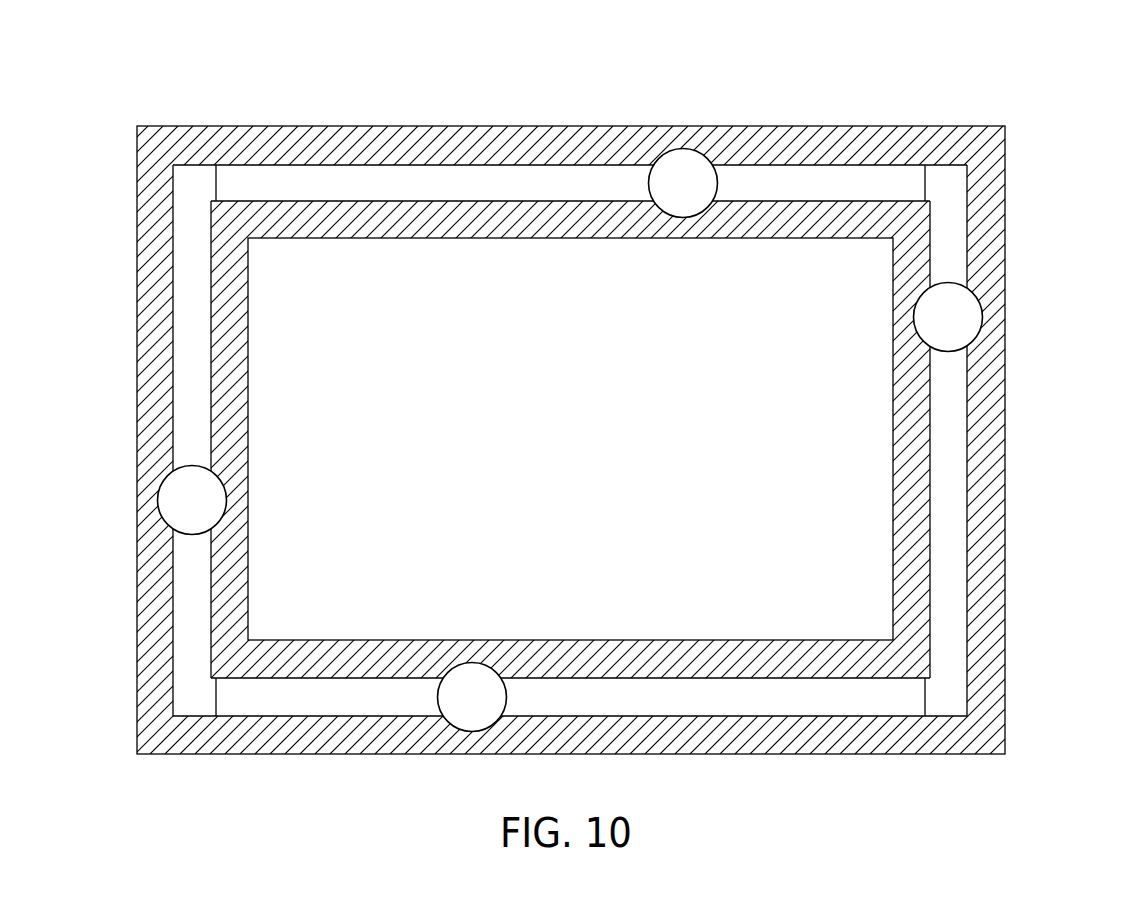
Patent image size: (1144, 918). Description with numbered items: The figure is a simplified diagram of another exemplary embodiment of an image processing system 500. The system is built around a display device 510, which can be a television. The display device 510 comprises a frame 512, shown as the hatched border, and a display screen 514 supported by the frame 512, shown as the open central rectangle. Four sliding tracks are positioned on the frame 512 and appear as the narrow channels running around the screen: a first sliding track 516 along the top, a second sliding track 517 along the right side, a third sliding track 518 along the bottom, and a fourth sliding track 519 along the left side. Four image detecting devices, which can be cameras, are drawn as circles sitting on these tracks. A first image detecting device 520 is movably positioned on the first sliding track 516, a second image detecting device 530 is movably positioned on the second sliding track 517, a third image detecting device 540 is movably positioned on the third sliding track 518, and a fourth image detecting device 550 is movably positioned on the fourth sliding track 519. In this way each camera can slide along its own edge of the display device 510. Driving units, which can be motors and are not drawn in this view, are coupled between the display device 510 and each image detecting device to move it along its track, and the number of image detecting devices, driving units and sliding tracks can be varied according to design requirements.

The image processing system 500 is at (1008, 102).
The display device 510 is at (600, 127).
The frame 512 is at (548, 158).
The display screen 514 is at (593, 447).
The first sliding track 516 is at (763, 193).
The second sliding track 517 is at (947, 372).
The third sliding track 518 is at (551, 710).
The fourth sliding track 519 is at (196, 442).
The first image detecting device 520 is at (663, 196).
The second image detecting device 530 is at (928, 330).
The third image detecting device 540 is at (452, 710).
The fourth image detecting device 550 is at (172, 513).